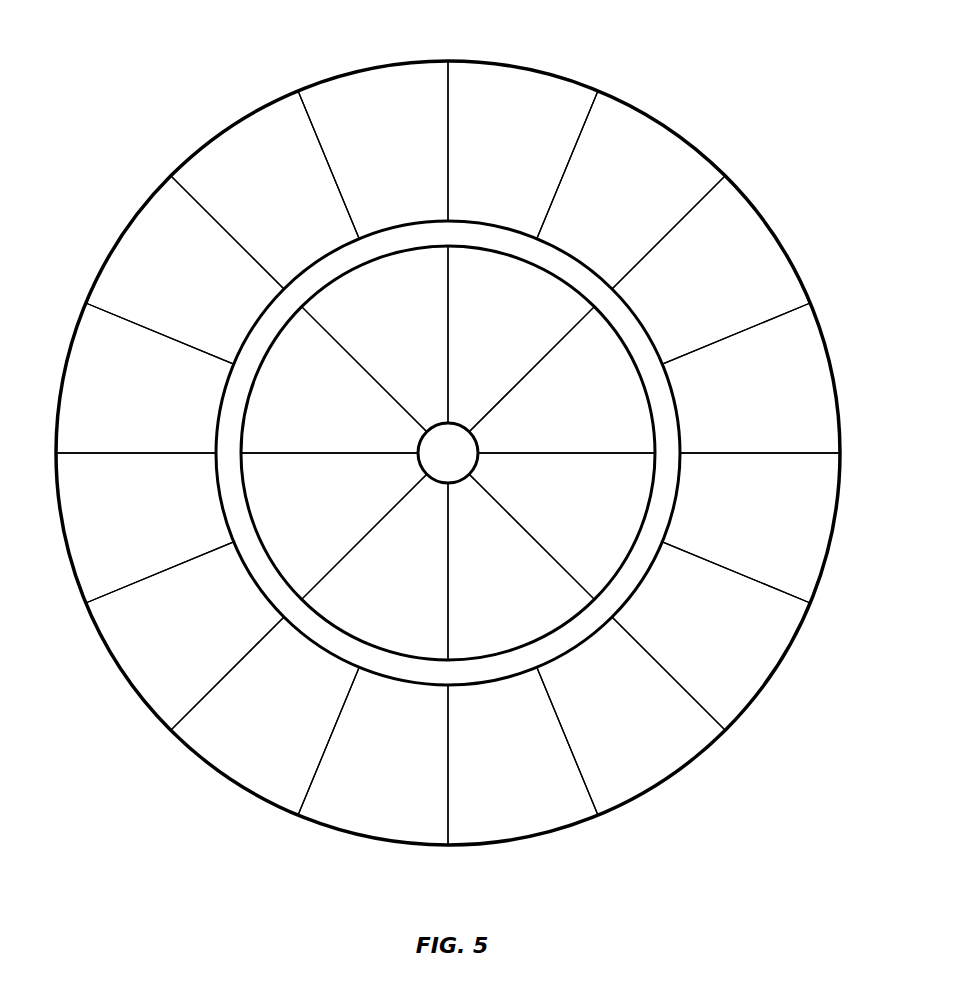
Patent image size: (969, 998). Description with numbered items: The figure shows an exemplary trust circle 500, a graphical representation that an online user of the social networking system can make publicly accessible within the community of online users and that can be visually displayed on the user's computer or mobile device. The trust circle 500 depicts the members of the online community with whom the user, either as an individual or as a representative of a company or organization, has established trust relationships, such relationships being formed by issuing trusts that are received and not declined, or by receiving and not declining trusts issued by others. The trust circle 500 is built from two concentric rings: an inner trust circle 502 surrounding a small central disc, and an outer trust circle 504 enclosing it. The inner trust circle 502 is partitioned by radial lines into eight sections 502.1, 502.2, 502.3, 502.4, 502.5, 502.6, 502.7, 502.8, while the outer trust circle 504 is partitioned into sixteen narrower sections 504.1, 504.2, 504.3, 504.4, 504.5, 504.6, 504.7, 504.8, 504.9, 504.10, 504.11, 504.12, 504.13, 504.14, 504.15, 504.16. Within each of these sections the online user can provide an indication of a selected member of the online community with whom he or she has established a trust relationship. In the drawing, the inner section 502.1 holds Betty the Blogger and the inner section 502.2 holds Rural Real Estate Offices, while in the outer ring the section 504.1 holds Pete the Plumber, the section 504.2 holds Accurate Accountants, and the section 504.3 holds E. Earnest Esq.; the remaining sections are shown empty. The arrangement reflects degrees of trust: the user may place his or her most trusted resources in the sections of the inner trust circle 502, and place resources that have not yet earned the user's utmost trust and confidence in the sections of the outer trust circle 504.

The trust circle 500 is at (247, 48).
The inner trust circle 502 is at (432, 249).
The outer trust circle 504 is at (440, 64).
The section of the inner trust circle 502.1 is at (284, 370).
The section of the inner trust circle 502.2 is at (387, 370).
The section of the inner trust circle 502.3 is at (519, 326).
The section of the inner trust circle 502.4 is at (589, 437).
The section of the inner trust circle 502.5 is at (567, 561).
The section of the inner trust circle 502.6 is at (455, 636).
The section of the inner trust circle 502.7 is at (324, 608).
The section of the inner trust circle 502.8 is at (254, 482).
The section of the outer trust circle 504.1 is at (86, 355).
The section of the outer trust circle 504.2 is at (147, 230).
The section of the outer trust circle 504.3 is at (253, 147).
The section of the outer trust circle 504.4 is at (395, 103).
The section of the outer trust circle 504.5 is at (532, 116).
The section of the outer trust circle 504.6 is at (660, 188).
The section of the outer trust circle 504.7 is at (742, 300).
The section of the outer trust circle 504.8 is at (783, 440).
The section of the outer trust circle 504.9 is at (770, 578).
The section of the outer trust circle 504.10 is at (694, 700).
The section of the outer trust circle 504.11 is at (589, 786).
The section of the outer trust circle 504.12 is at (458, 830).
The section of the outer trust circle 504.13 is at (312, 813).
The section of the outer trust circle 504.14 is at (186, 743).
The section of the outer trust circle 504.15 is at (94, 621).
The section of the outer trust circle 504.16 is at (67, 482).